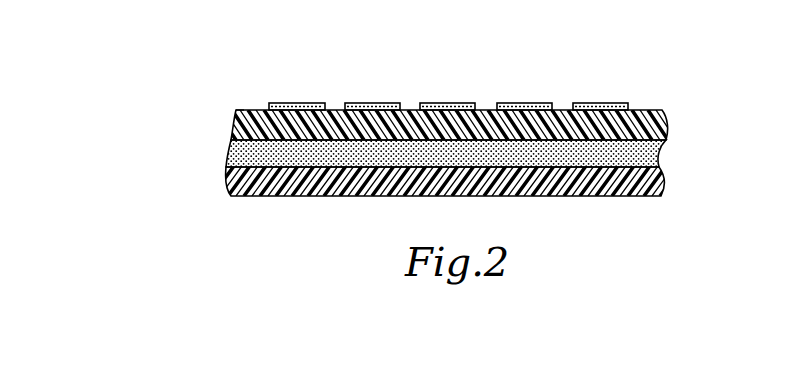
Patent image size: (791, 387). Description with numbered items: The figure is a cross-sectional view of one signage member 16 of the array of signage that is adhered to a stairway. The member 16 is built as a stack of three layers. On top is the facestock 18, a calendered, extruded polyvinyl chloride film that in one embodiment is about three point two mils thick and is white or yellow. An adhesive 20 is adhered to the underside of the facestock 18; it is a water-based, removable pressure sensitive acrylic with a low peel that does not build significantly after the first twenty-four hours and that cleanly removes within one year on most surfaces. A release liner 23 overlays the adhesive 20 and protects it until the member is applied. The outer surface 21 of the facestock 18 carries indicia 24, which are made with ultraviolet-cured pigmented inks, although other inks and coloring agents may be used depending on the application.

The signage member 16 is at (136, 60).
The facestock 18 is at (667, 123).
The adhesive 20 is at (665, 150).
The outer surface 21 is at (233, 97).
The liner 23 is at (664, 185).
The indicia 24 is at (298, 103).